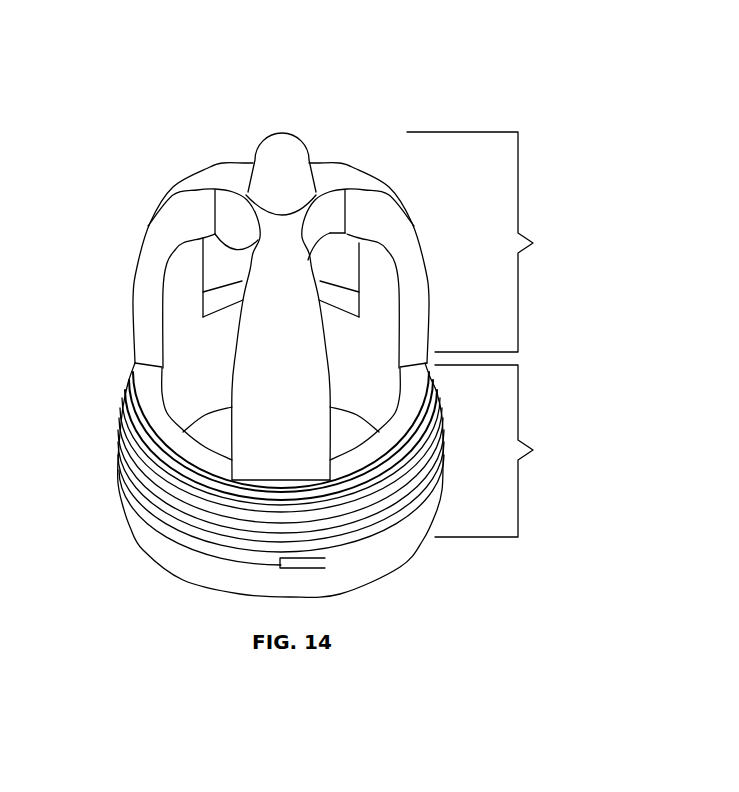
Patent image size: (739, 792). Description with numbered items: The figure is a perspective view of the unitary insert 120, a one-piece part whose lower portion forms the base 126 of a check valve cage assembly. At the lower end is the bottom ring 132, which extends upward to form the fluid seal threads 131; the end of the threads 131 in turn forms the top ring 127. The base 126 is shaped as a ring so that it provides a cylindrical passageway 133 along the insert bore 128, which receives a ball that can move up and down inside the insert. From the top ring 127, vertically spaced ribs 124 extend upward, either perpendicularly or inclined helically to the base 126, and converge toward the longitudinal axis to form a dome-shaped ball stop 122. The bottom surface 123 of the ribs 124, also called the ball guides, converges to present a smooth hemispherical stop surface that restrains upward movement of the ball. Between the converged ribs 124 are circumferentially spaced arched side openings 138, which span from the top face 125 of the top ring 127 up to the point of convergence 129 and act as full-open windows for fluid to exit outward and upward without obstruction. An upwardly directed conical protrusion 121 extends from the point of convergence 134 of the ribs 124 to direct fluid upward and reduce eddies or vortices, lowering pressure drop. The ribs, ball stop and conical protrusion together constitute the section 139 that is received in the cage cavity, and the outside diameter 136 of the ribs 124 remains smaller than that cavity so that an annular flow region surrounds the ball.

The unitary insert 120 is at (380, 82).
The conical protrusion 121 is at (283, 143).
The ball stop 122 is at (212, 237).
The bottom surface of the ribs 123 is at (177, 289).
The ribs 124 is at (163, 237).
The top face of the top ring 125 is at (150, 410).
The base 126 is at (503, 451).
The top ring 127 is at (410, 462).
The insert bore 128 is at (367, 403).
The point of convergence 129 is at (240, 213).
The fluid seal threads 131 is at (425, 458).
The bottom ring 132 is at (422, 525).
The cylindrical passageway 133 is at (207, 426).
The point of convergence of the ribs 134 is at (313, 192).
The outside diameter of the insert ribs 136 is at (428, 323).
The arched side openings 138 is at (281, 352).
The ribs, ball stop, conical protrusion forming section 139 is at (489, 242).